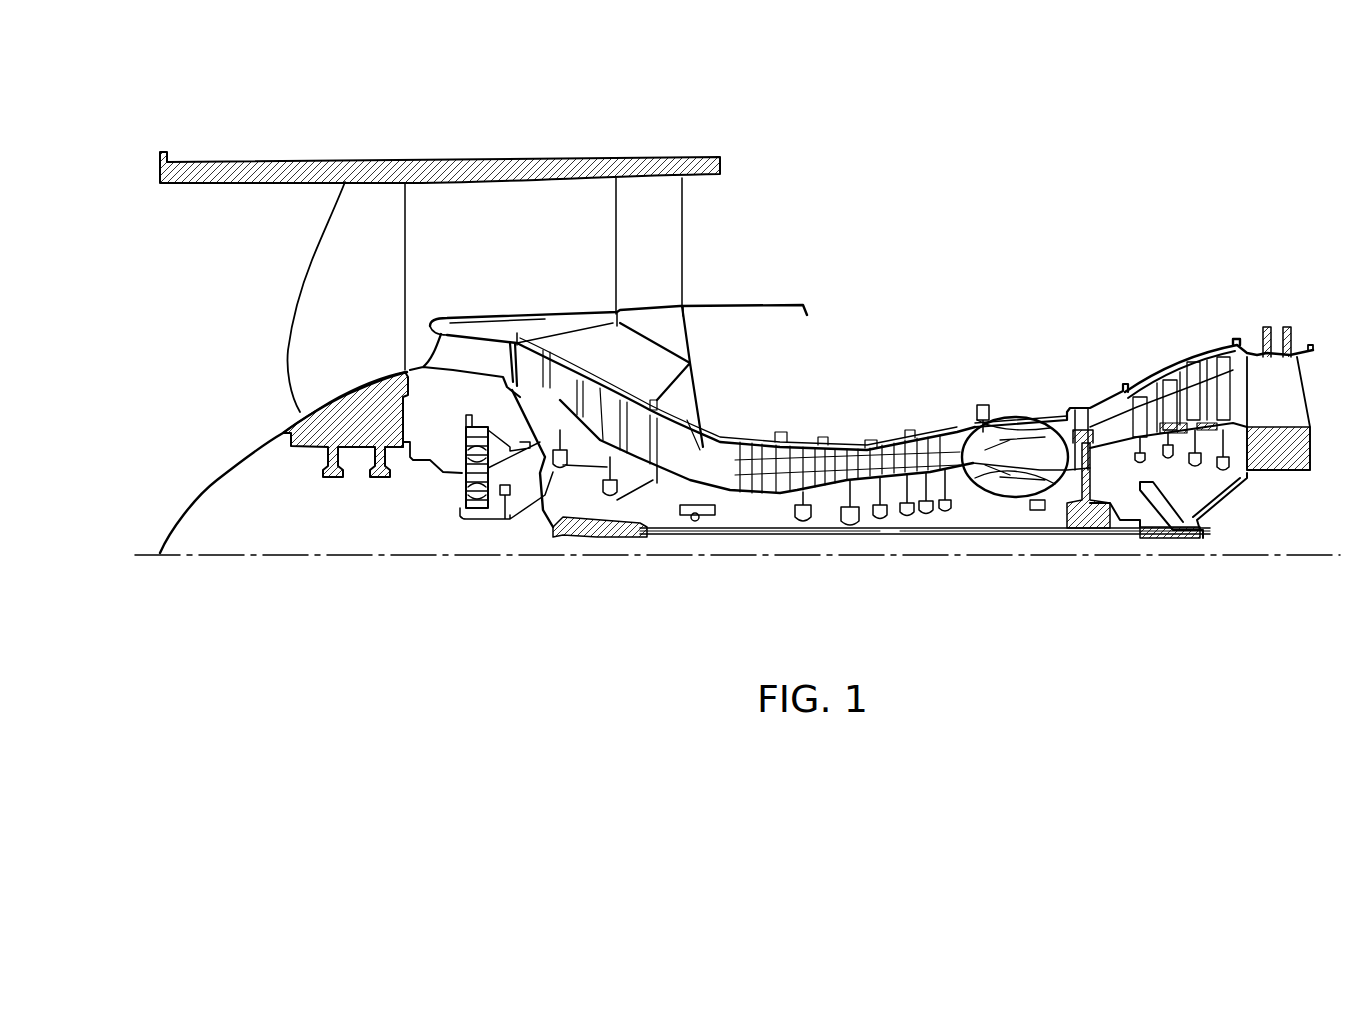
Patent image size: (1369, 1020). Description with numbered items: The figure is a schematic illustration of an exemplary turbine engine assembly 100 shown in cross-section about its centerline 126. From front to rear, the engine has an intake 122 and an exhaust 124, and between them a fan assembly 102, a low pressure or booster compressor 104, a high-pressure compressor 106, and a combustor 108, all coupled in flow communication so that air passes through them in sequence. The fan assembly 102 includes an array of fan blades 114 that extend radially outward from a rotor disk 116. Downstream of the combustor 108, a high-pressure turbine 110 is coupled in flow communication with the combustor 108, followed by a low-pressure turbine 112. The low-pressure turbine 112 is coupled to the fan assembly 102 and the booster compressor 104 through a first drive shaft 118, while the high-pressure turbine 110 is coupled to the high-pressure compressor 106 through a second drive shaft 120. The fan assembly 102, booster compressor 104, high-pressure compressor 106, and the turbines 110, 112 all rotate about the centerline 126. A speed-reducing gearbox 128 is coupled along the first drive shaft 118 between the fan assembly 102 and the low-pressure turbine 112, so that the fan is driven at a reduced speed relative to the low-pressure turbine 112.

The turbine engine assembly 100 is at (1045, 253).
The fan assembly 102 is at (292, 414).
The booster compressor 104 is at (578, 358).
The high-pressure compressor 106 is at (843, 448).
The combustor 108 is at (1012, 425).
The high-pressure turbine 110 is at (1088, 420).
The low-pressure turbine 112 is at (1198, 357).
The fan blades 114 is at (366, 301).
The rotor disk 116 is at (305, 448).
The first drive shaft 118 is at (894, 543).
The second drive shaft 120 is at (1034, 510).
The intake 122 is at (154, 214).
The exhaust 124 is at (1327, 367).
The centerline 126 is at (370, 558).
The speed-reducing gearbox 128 is at (447, 488).